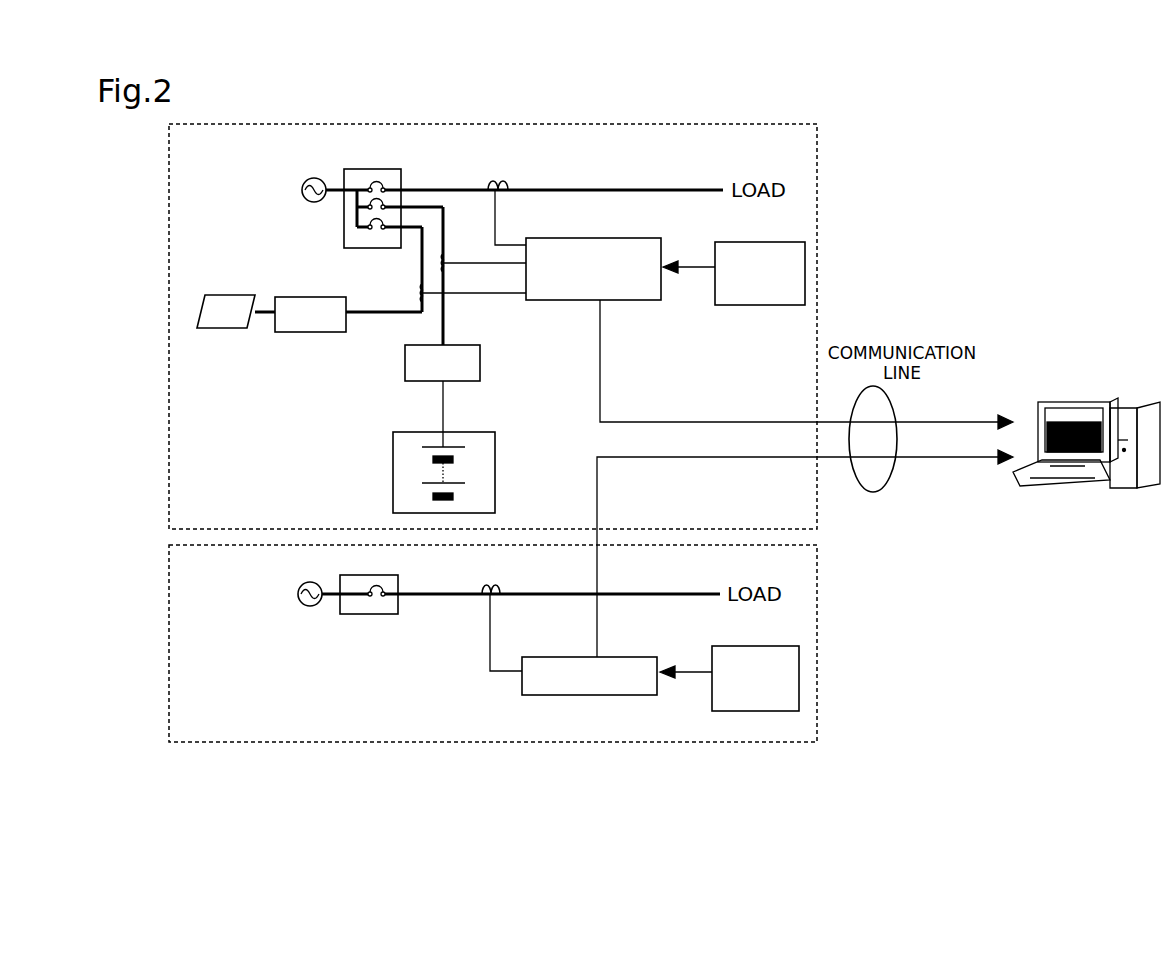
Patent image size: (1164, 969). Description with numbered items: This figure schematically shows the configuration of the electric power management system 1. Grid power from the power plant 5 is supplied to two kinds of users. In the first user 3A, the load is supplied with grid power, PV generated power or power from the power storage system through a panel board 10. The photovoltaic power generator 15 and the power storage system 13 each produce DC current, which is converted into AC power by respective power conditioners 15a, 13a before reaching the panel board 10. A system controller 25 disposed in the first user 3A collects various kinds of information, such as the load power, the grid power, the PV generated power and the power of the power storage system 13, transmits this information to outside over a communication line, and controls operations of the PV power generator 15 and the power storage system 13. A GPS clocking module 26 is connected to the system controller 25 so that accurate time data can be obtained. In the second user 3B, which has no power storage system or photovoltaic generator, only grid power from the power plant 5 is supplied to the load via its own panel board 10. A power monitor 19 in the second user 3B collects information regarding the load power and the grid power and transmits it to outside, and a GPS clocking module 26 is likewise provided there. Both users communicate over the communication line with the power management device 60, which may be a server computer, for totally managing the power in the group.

The electric power management system 1 is at (1018, 159).
The first user 3A is at (817, 245).
The second user 3B is at (817, 652).
The power plant 5 is at (303, 180).
The panel board 10 is at (403, 177).
The power storage system 13 is at (393, 478).
The power conditioner 13a is at (405, 357).
The photovoltaic power generator 15 is at (222, 295).
The power conditioner 15a is at (310, 297).
The power monitor 19 is at (533, 695).
The system controller 25 is at (632, 302).
The GPS clocking module 26 is at (733, 305).
The power management device 60 is at (1077, 395).